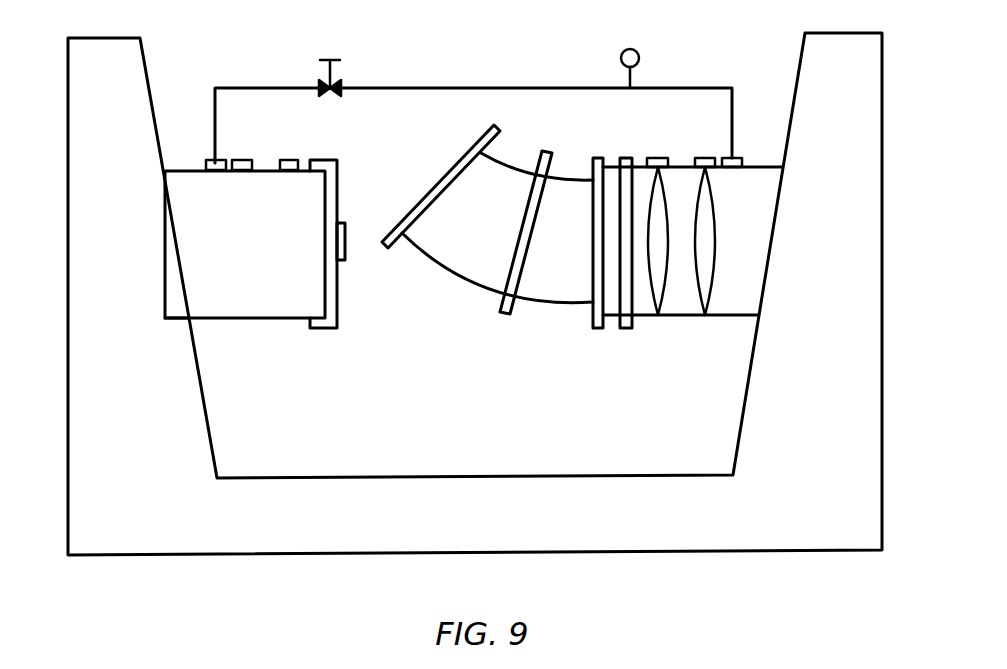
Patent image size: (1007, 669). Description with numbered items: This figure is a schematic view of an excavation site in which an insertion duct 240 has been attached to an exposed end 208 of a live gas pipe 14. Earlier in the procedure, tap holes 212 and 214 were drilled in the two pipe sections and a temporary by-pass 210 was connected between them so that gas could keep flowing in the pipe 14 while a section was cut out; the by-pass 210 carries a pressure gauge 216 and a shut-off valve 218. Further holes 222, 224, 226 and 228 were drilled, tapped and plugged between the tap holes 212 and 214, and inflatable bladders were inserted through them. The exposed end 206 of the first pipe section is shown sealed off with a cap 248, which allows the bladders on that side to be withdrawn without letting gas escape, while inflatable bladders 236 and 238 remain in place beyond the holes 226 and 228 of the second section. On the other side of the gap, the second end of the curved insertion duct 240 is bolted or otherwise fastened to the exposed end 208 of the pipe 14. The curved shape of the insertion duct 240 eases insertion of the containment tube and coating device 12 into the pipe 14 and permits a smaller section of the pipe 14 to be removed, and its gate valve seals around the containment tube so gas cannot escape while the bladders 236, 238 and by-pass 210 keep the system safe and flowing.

The light source housing 12 is at (207, 318).
The live gas pipe 14 is at (260, 328).
The exposed end 206 is at (318, 338).
The exposed end 208 is at (725, 330).
The temporary by-pass 210 is at (510, 86).
The tap hole 212 is at (207, 165).
The tap hole 214 is at (742, 162).
The pressure gauge 216 is at (635, 47).
The shut-off valve 218 is at (327, 58).
The hole 222 is at (250, 165).
The hole 224 is at (291, 163).
The hole 226 is at (652, 157).
The hole 228 is at (708, 157).
The inflatable bladder 236 is at (665, 283).
The inflatable bladder 238 is at (715, 263).
The insertion duct 240 is at (452, 270).
The cap 248 is at (337, 278).